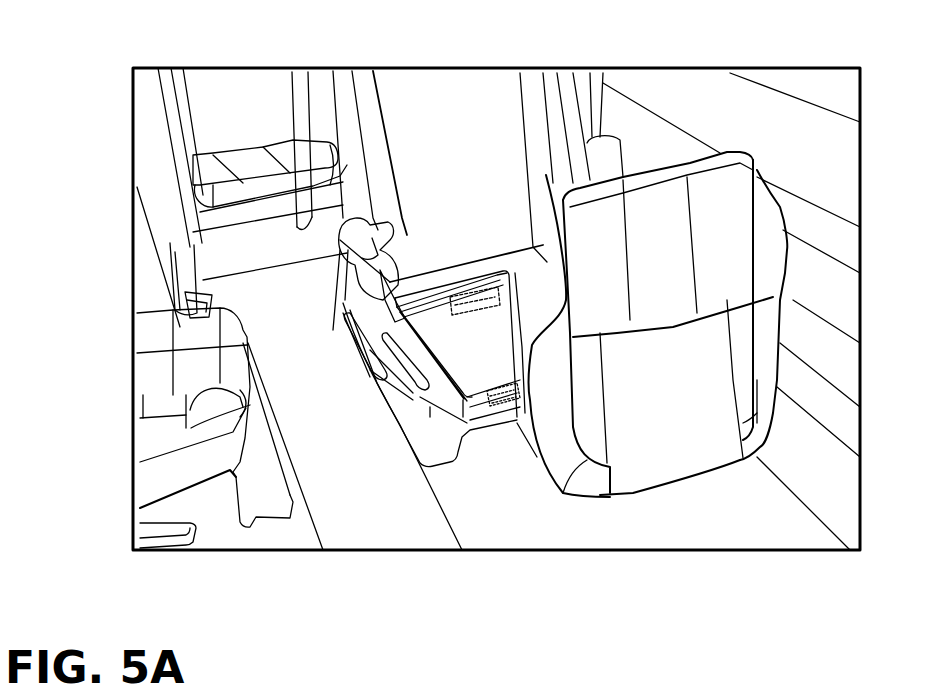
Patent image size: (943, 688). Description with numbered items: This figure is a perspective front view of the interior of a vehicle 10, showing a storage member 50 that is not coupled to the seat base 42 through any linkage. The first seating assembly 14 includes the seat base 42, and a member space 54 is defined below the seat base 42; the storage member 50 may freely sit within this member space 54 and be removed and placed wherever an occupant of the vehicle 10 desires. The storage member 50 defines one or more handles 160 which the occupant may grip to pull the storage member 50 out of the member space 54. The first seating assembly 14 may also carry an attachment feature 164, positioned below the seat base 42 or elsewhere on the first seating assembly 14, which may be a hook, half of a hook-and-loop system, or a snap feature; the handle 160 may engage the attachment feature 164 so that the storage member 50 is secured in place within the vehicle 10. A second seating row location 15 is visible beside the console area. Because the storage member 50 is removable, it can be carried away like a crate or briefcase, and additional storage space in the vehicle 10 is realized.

The vehicle 10 is at (742, 48).
The first seating assembly 14 is at (628, 112).
The third row seat 15 is at (230, 429).
The seat base 42 is at (708, 452).
The storage member 50 is at (470, 380).
The member space 54 is at (428, 278).
The handle 160 is at (470, 285).
The attachment feature 164 is at (400, 352).